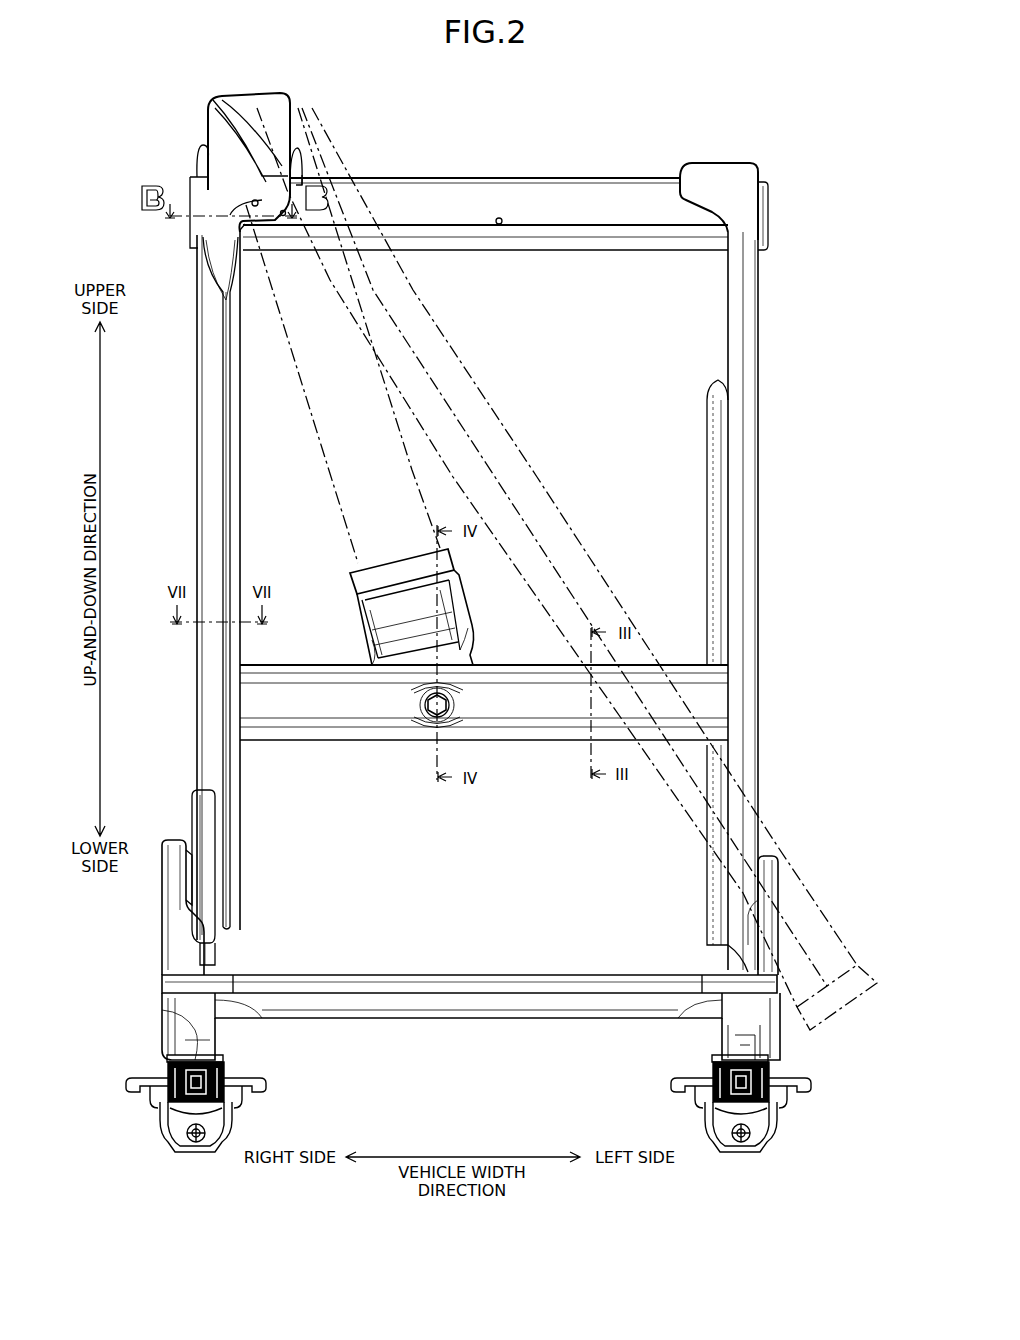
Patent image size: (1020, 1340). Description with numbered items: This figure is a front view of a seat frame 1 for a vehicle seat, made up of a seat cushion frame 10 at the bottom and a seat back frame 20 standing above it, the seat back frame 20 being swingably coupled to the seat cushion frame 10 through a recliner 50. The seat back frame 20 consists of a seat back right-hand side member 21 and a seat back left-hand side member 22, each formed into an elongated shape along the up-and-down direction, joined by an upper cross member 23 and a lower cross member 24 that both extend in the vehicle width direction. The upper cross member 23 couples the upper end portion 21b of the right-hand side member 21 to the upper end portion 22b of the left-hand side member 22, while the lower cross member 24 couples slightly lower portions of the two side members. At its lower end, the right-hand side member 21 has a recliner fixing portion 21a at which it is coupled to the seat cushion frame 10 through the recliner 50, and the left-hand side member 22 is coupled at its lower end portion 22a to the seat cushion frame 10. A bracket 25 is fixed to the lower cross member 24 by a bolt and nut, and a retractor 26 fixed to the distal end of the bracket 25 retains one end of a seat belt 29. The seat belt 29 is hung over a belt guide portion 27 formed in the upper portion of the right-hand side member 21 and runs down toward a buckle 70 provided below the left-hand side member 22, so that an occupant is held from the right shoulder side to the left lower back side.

The seat frame 1 is at (586, 124).
The seat cushion frame 10 is at (486, 956).
The seat back frame 20 is at (791, 166).
The seat back right-hand side member 21 is at (197, 494).
The recliner fixing portion 21a is at (238, 897).
The upper end portion of the seat back right-hand side member 21b is at (213, 184).
The seat back left-hand side member 22 is at (758, 498).
The lower end portion of the seat back left-hand side member 22a is at (707, 907).
The upper end portion of the seat back left-hand side member 22b is at (766, 200).
The upper cross member 23 is at (496, 178).
The lower cross member 24 is at (328, 746).
The bracket 25 is at (476, 632).
The retractor 26 is at (462, 560).
The belt guide portion 27 is at (207, 104).
The seat belt 29 is at (320, 450).
The recliner 50 is at (174, 818).
The buckle 70 is at (841, 1026).